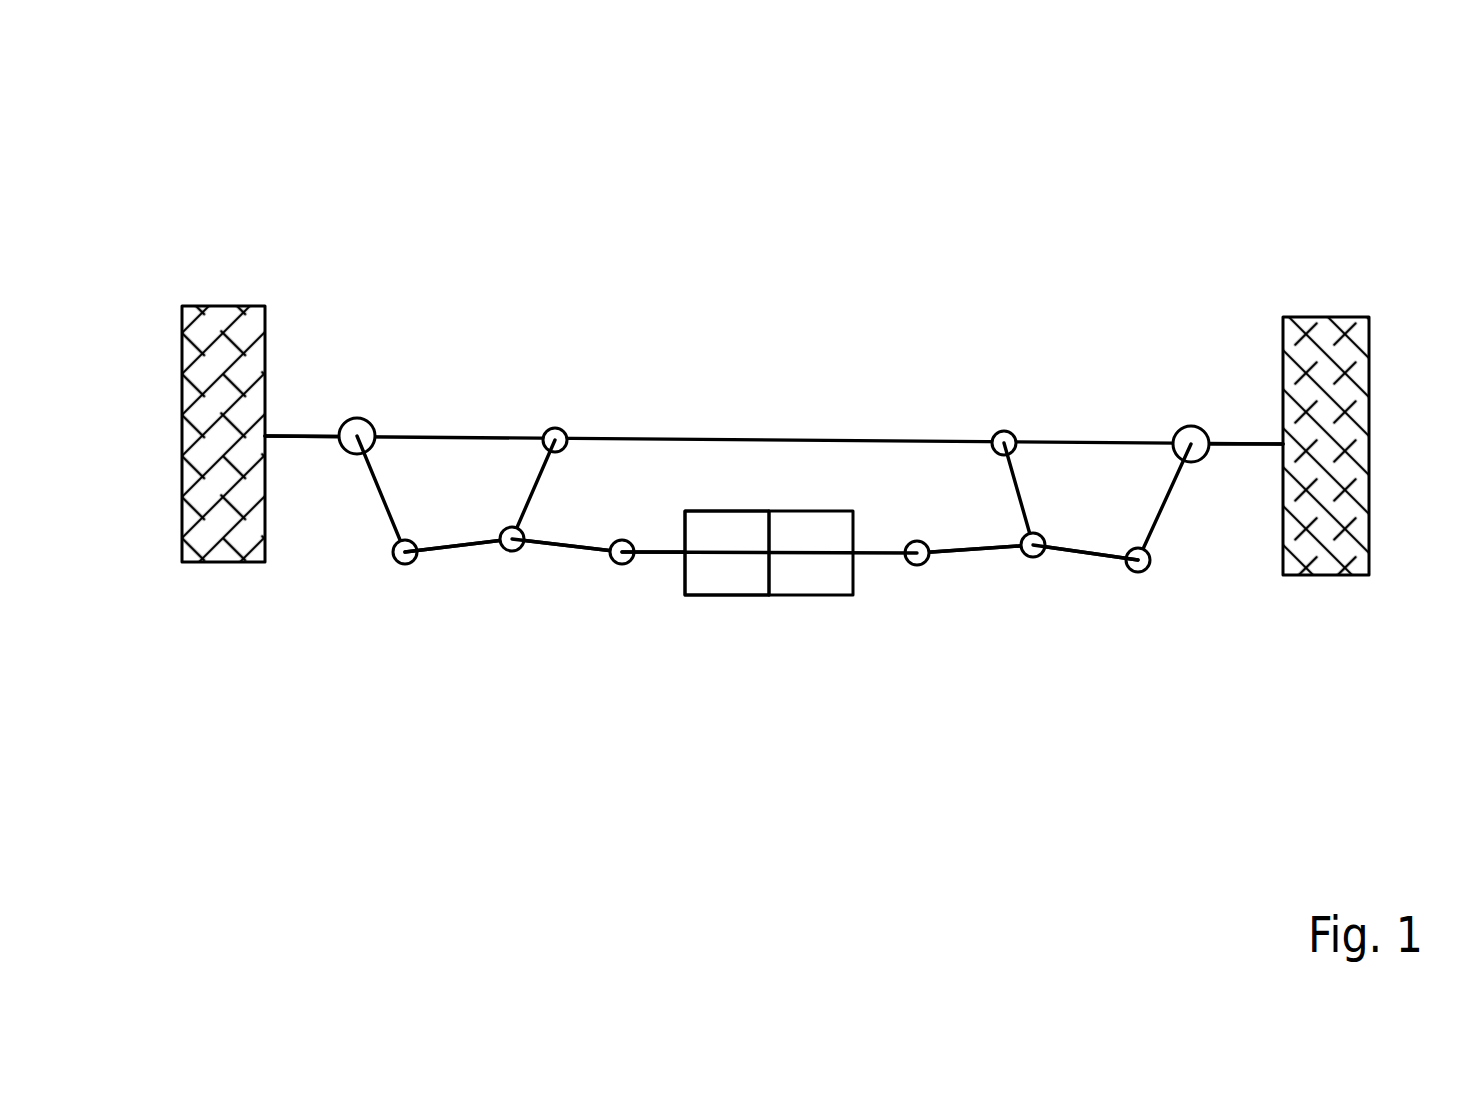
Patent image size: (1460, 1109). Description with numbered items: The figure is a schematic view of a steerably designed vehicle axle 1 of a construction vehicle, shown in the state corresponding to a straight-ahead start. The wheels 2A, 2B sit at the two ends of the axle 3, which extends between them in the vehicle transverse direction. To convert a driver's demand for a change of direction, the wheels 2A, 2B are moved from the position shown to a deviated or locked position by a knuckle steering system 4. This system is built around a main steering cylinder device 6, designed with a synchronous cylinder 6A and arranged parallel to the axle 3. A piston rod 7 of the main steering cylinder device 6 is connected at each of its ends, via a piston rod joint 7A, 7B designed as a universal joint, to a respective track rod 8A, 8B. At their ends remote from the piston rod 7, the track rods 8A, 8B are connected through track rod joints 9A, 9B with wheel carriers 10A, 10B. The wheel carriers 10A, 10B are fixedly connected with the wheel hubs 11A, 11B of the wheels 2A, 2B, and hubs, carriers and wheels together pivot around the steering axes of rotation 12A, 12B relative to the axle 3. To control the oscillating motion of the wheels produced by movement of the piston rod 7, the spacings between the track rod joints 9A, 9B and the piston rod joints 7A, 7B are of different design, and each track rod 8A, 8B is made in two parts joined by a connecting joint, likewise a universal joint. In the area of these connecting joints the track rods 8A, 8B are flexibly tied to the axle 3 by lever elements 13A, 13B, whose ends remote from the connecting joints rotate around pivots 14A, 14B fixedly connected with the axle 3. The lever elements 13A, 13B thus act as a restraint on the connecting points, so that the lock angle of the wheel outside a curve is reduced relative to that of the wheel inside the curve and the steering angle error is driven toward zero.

The vehicle axle 1 is at (198, 181).
The wheel 2A is at (200, 357).
The wheel 2B is at (1320, 400).
The axle 3 is at (843, 440).
The knuckle steering system 4 is at (650, 608).
The main steering cylinder device 6 is at (802, 614).
The synchronous cylinder 6A is at (728, 578).
The piston rod 7 is at (867, 554).
The piston rod joint 7A is at (622, 552).
The piston rod joint 7B is at (917, 553).
The track rod 8A is at (441, 592).
The track rod 8B is at (1013, 568).
The track rod joint 9A is at (400, 553).
The track rod joint 9B is at (1145, 562).
The wheel carrier 10A is at (380, 500).
The wheel carrier 10B is at (1157, 530).
The wheel hub 11A is at (282, 436).
The wheel hub 11B is at (1233, 444).
The steering axis of rotation 12A is at (357, 436).
The steering axis of rotation 12B is at (1191, 444).
The lever element 13A is at (538, 483).
The lever element 13B is at (1007, 572).
The pivot 14A is at (555, 440).
The pivot 14B is at (1004, 443).